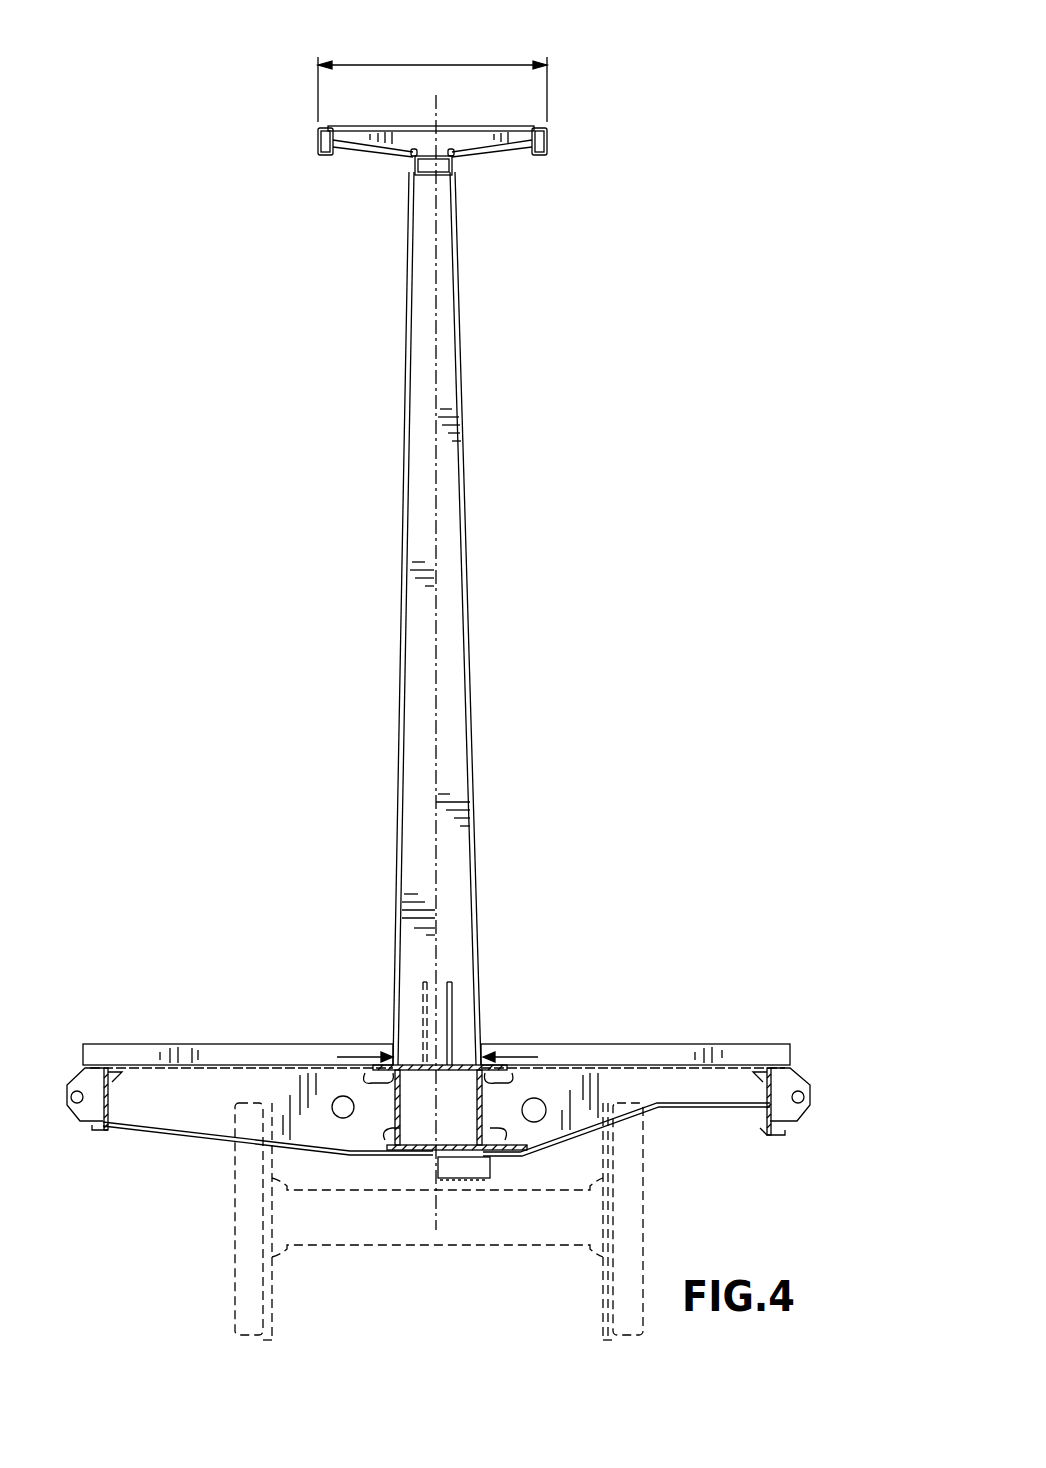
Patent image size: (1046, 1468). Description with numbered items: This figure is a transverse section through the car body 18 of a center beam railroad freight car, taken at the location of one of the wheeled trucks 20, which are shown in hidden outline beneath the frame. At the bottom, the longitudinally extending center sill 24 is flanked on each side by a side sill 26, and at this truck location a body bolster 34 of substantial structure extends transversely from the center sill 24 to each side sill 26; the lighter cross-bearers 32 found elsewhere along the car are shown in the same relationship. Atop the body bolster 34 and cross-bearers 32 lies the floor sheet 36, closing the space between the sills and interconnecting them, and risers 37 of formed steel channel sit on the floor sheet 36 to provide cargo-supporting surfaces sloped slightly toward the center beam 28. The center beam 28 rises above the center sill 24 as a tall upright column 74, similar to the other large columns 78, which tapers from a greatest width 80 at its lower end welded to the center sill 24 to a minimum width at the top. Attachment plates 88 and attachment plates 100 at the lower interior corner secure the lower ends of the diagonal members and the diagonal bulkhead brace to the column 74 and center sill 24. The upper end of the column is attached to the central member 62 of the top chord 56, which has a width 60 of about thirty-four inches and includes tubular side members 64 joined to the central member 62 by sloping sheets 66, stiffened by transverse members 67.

The car body 18 is at (450, 671).
The wheeled trucks 20 is at (645, 1215).
The center sill 24 is at (450, 1088).
The side sills 26 is at (783, 1083).
The center beam structure 28 is at (429, 618).
The cross-bearers 32 is at (170, 1117).
The body bolster 34 is at (702, 1090).
The floor sheet 36 is at (436, 1021).
The risers 37 is at (155, 1042).
The top chord 56 is at (471, 107).
The width 60 is at (470, 62).
The central member 62 is at (410, 160).
The side members 64 is at (547, 150).
The sloping sheets 66 is at (482, 152).
The transverse members 67 is at (478, 127).
The column 74 is at (470, 638).
The large columns 78 is at (400, 756).
The greatest width 80 is at (362, 1052).
The attachment plates 88 is at (420, 992).
The attachment plates 100 is at (453, 993).